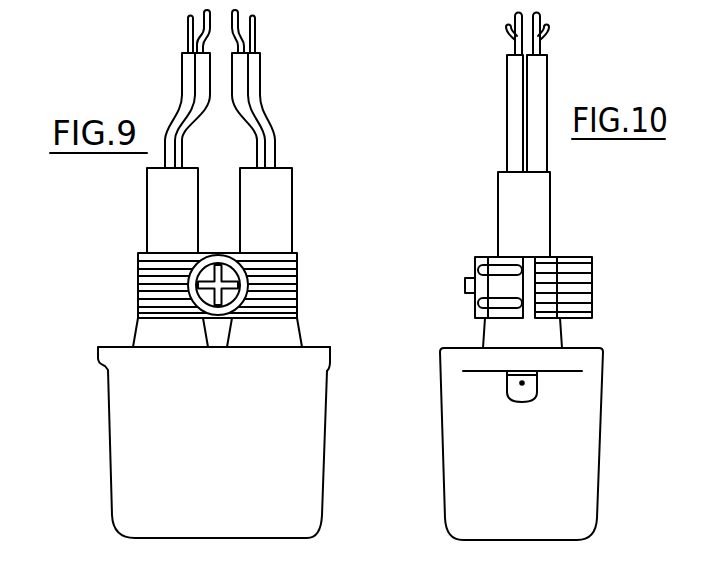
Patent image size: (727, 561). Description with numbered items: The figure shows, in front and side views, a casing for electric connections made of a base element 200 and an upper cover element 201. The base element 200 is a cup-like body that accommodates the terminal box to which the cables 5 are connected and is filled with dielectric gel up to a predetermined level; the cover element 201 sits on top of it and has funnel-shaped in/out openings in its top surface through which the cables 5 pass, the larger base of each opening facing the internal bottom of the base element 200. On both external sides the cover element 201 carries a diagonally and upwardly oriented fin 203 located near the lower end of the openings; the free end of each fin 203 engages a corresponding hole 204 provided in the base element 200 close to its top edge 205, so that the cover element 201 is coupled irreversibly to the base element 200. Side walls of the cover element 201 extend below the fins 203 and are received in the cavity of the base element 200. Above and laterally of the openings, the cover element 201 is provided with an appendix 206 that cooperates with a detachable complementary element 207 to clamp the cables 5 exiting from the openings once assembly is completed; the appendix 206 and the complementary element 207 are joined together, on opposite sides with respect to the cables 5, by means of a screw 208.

In FIG. 9, the cables 5 is at (285, 126).
In FIG. 10, the cables 5 is at (484, 116).
In FIG. 9, the base element 200 is at (78, 418).
In FIG. 10, the base element 200 is at (622, 435).
In FIG. 9, the cover element 201 is at (312, 216).
In FIG. 10, the cover element 201 is at (570, 217).
In FIG. 10, the fin 203 is at (520, 385).
In FIG. 10, the hole 204 is at (507, 383).
In FIG. 9, the top edge 205 is at (326, 360).
In FIG. 10, the appendix 206 is at (470, 268).
In FIG. 10, the complementary element 207 is at (592, 302).
In FIG. 10, the screw 208 is at (467, 287).